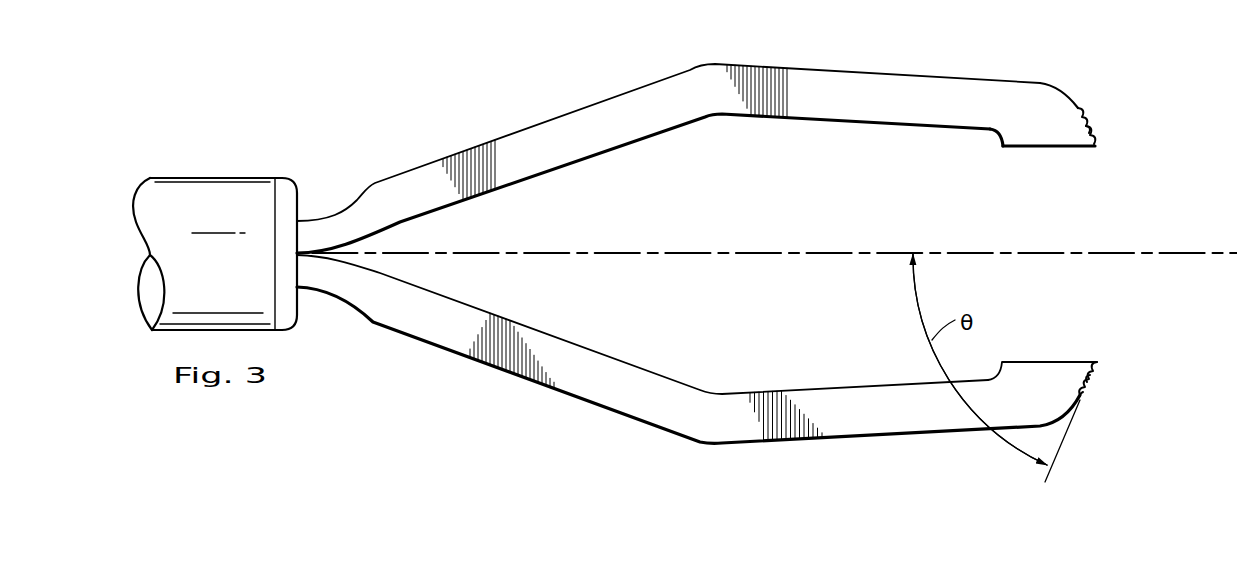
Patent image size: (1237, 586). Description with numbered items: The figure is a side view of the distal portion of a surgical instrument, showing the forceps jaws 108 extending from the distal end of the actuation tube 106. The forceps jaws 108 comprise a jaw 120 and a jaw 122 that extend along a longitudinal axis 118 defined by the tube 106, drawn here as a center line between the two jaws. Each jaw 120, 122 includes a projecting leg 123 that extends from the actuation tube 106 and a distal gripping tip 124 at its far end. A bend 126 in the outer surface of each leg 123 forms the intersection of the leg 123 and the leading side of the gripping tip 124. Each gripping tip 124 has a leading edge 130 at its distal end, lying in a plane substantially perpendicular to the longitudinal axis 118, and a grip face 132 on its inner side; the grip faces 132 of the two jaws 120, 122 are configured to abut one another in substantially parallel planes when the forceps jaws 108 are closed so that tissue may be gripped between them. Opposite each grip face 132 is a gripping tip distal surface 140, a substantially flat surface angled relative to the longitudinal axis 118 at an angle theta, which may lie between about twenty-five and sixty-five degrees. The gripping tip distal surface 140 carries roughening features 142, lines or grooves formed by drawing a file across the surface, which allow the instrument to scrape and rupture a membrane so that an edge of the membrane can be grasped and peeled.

The actuation tube 106 is at (212, 177).
The forceps jaws 108 is at (443, 387).
The longitudinal axis 118 is at (1185, 250).
The jaw 120 is at (736, 257).
The jaw 122 is at (737, 361).
The projecting leg 123 is at (851, 70).
The distal gripping tip 124 is at (1095, 123).
The bend 126 is at (1058, 87).
The leading edge 130 is at (1096, 146).
The grip face 132 is at (1048, 149).
The gripping tip distal surface 140 is at (1082, 110).
The roughening features 142 is at (1082, 393).